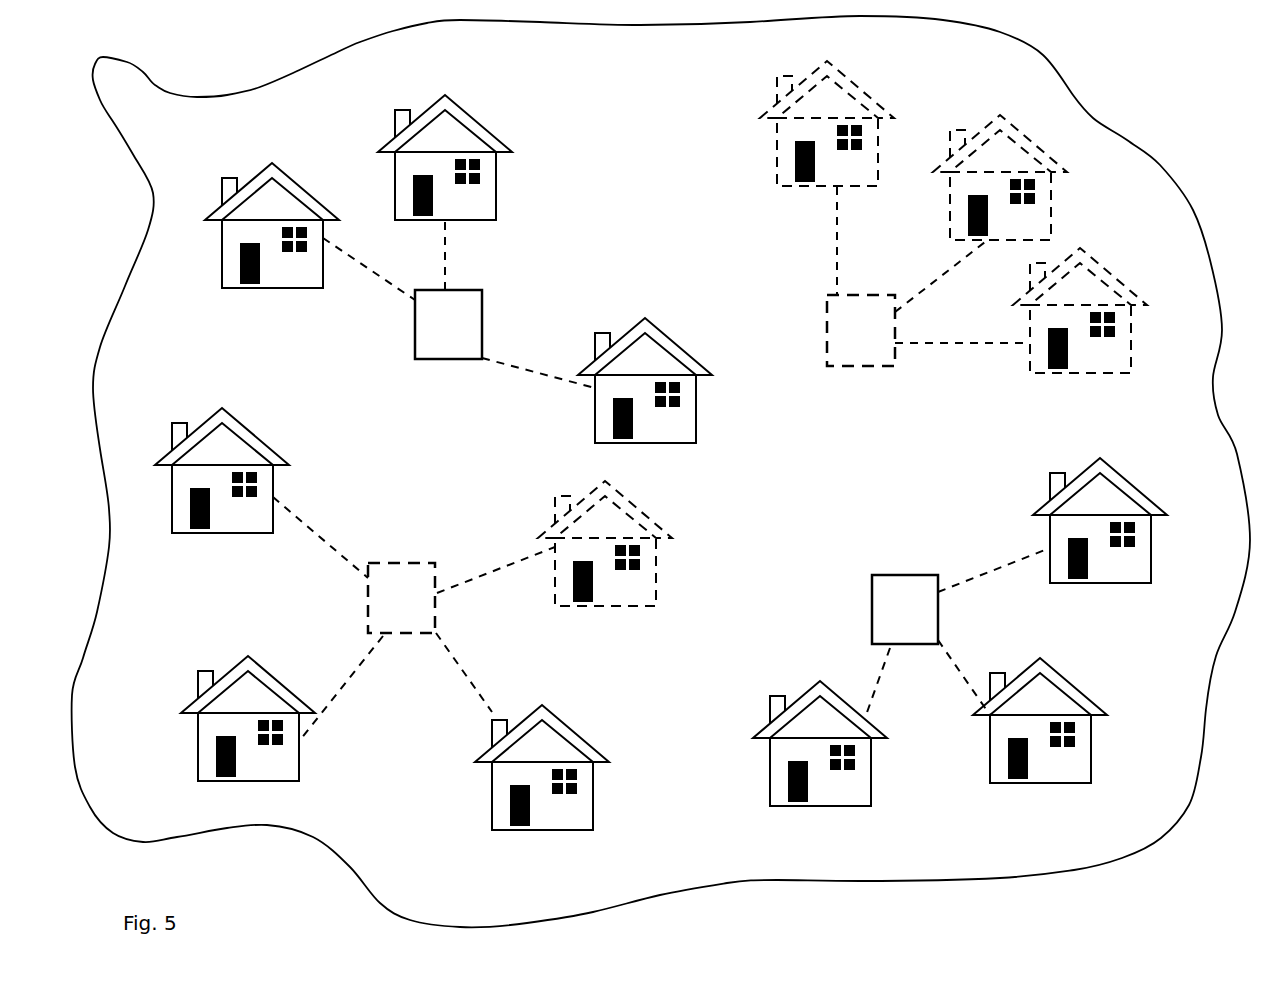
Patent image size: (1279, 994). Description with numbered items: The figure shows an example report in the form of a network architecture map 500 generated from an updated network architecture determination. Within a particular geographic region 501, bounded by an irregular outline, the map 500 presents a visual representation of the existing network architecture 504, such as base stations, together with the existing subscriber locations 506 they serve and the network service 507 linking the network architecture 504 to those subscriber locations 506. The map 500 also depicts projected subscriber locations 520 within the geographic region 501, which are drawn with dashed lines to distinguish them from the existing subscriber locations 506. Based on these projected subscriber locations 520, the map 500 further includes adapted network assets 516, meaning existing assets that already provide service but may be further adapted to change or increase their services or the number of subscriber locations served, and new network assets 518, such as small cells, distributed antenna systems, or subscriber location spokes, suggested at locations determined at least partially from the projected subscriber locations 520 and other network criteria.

The network architecture map 500 is at (1203, 105).
The geographic region 501 is at (1148, 835).
The existing network architecture 504 is at (467, 333).
The existing subscriber locations 506 is at (258, 177).
The network service 507 is at (448, 250).
The adapted network assets 516 is at (437, 613).
The new network assets 518 is at (826, 355).
The projected subscriber locations 520 is at (777, 163).